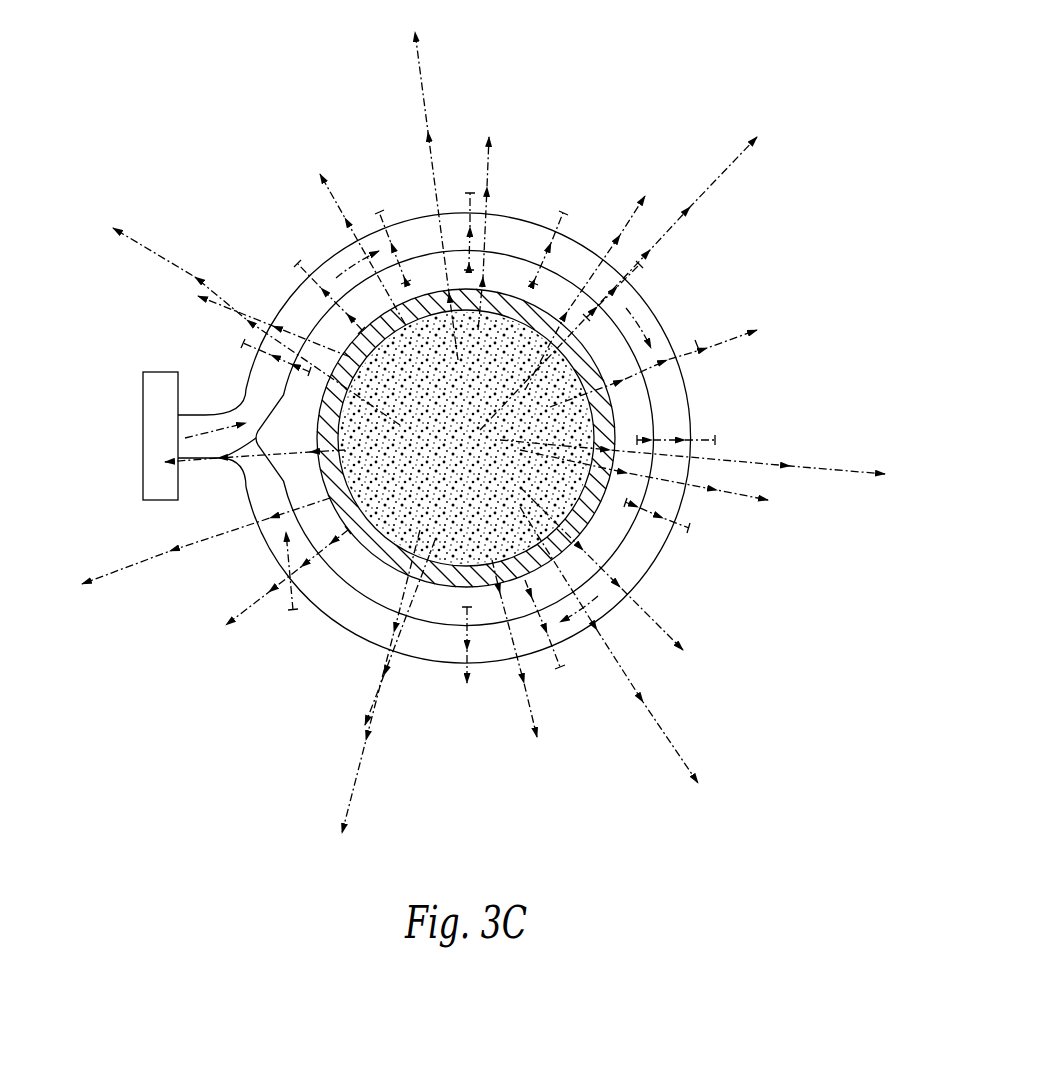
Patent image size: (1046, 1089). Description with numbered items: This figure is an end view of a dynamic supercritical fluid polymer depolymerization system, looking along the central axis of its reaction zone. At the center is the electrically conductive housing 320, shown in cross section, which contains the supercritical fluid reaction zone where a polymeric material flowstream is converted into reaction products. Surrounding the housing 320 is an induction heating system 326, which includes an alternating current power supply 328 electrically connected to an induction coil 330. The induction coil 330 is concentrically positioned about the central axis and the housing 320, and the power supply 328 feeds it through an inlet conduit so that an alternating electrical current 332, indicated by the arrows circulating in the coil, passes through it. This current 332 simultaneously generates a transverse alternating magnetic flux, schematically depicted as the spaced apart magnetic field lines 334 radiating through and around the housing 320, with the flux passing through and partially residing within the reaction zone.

The electrically conductive housing 320 is at (620, 413).
The induction heating system 326 is at (128, 405).
The alternating current power supply 328 is at (152, 477).
The induction coil 330 is at (487, 663).
The alternating electrical current 332 is at (200, 433).
The magnetic field lines 334 is at (662, 253).